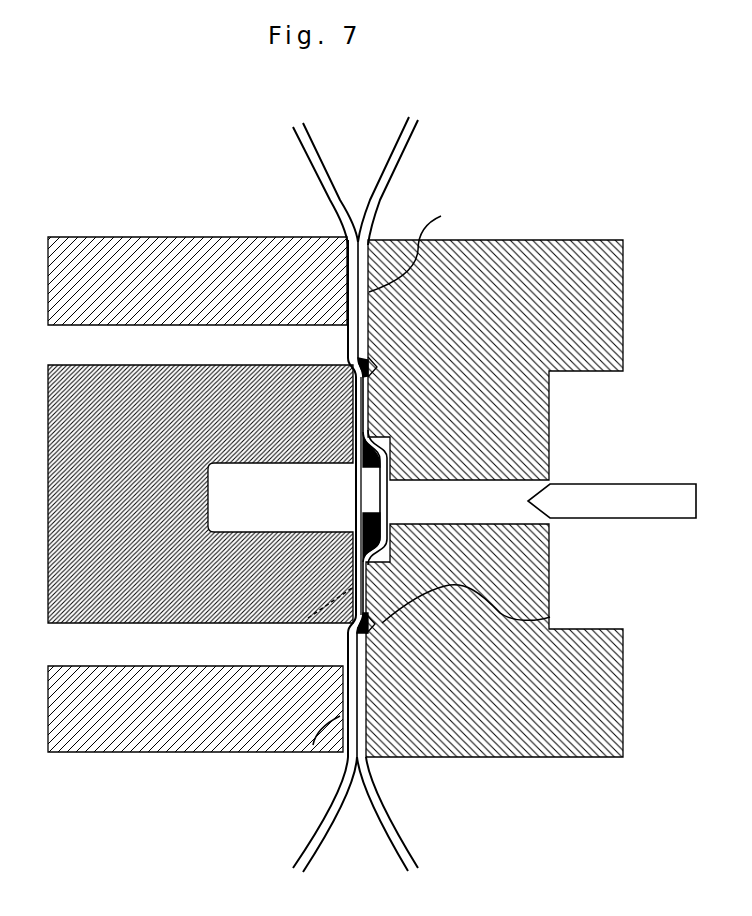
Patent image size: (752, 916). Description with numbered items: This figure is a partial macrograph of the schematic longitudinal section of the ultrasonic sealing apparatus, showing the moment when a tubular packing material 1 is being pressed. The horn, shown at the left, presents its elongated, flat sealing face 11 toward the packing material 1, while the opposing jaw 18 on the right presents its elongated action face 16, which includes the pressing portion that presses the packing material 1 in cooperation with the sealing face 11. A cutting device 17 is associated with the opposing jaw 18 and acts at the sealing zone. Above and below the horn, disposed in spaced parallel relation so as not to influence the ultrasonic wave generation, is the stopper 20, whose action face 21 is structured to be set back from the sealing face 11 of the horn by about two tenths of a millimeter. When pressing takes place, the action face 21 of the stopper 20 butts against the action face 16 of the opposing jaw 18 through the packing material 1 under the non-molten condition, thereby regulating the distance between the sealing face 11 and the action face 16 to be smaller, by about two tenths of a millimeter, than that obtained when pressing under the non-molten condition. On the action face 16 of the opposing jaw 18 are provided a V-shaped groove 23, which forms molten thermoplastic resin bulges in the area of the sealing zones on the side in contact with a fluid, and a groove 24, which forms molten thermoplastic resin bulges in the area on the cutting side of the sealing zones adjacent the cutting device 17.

The tubular packing material 1 is at (408, 151).
The sealing face 11 is at (310, 620).
The action face 16 is at (417, 248).
The cutting device 17 is at (600, 512).
The opposing jaw 18 is at (526, 233).
The stopper 20 is at (130, 752).
The action face of the stopper 21 is at (313, 745).
The V-shaped groove 23 is at (550, 617).
The groove 24 is at (392, 540).